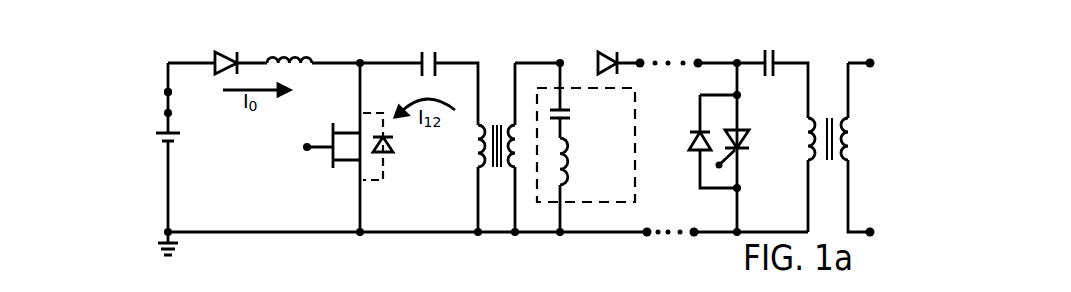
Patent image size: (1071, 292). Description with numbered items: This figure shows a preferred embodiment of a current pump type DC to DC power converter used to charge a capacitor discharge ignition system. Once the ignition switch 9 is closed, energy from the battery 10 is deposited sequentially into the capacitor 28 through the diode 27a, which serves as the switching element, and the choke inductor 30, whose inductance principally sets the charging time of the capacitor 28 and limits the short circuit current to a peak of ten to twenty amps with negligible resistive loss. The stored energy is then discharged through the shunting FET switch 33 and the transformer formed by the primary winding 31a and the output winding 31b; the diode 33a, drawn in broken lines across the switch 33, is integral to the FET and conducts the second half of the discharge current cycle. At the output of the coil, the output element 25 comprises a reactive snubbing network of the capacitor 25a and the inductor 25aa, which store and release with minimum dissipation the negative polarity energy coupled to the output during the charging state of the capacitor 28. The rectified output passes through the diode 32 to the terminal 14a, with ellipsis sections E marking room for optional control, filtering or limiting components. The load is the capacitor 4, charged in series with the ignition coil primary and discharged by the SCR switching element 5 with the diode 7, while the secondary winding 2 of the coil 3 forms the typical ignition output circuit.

The ignition switch 9 is at (160, 101).
The battery 10 is at (153, 141).
The diode 27a is at (221, 51).
The choke inductor 30 is at (289, 45).
The capacitor 28 is at (428, 52).
The shunting FET switch 33 is at (329, 143).
The diode 33a is at (398, 146).
The primary winding 31a is at (474, 146).
The output winding 31b is at (531, 146).
The diode 32 is at (606, 51).
The terminal 14a is at (666, 132).
The ellipsis sections E is at (670, 253).
The output element 25 is at (603, 137).
The capacitor 25a is at (580, 118).
The inductor 25aa is at (589, 161).
The diode 7 is at (707, 141).
The SCR switching element 5 is at (740, 149).
The capacitor 4 is at (769, 52).
The secondary winding 2 is at (851, 139).
The coil 3 is at (821, 156).